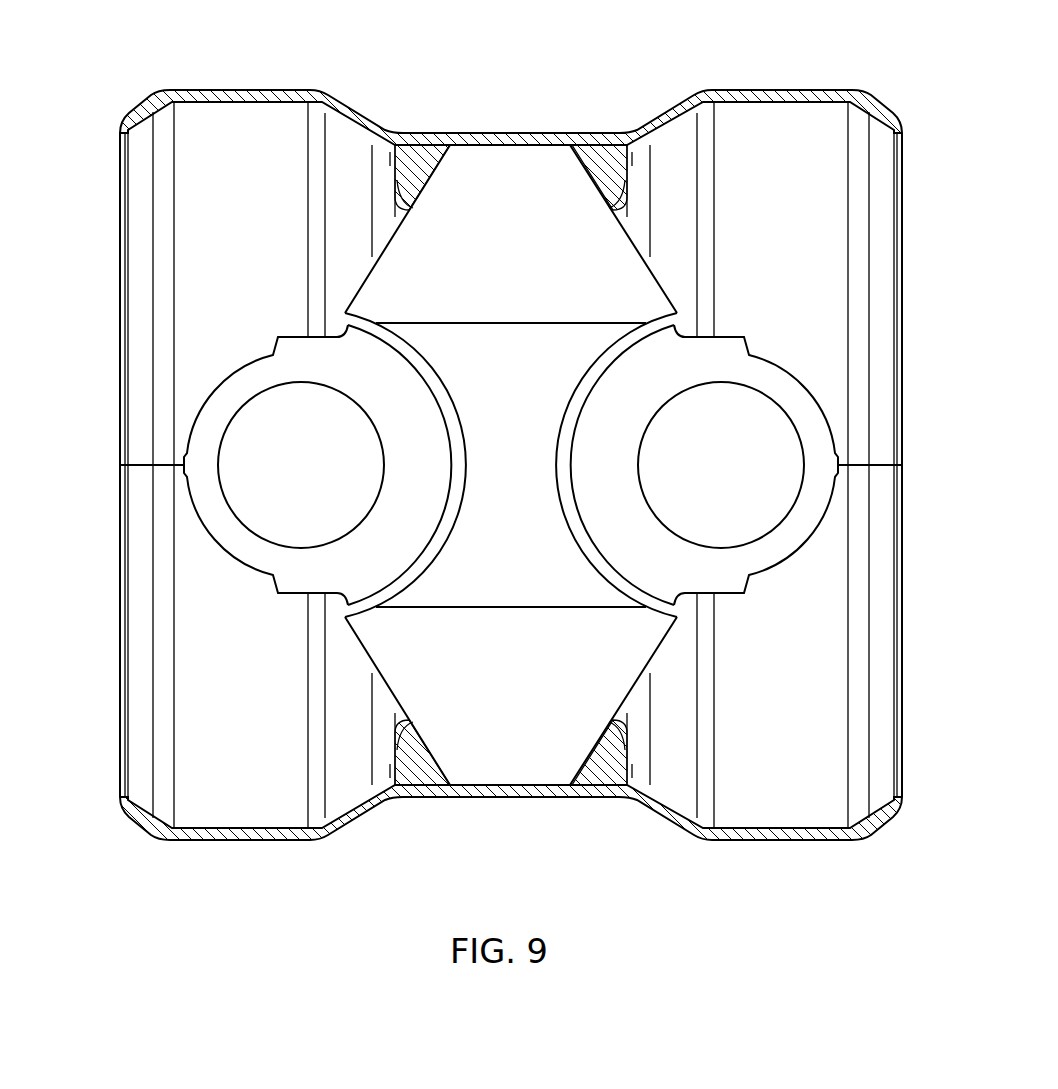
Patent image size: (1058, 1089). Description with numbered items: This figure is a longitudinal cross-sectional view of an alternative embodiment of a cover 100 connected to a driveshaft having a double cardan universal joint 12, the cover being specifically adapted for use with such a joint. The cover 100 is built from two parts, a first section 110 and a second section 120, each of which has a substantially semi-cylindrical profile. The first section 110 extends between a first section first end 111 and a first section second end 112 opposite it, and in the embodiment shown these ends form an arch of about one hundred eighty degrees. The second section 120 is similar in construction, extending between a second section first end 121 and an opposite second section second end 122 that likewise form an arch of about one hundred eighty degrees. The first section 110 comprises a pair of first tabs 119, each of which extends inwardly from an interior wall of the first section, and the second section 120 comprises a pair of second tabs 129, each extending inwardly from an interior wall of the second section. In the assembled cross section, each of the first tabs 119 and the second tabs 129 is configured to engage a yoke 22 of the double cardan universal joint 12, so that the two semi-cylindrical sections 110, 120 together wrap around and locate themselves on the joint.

The cover 100 is at (104, 110).
The first section 110 is at (786, 122).
The first section first end 111 is at (120, 265).
The first section second end 112 is at (902, 315).
The first tabs 119 is at (410, 166).
The second section 120 is at (772, 810).
The second section first end 121 is at (120, 690).
The second section second end 122 is at (902, 655).
The second tabs 129 is at (402, 755).
The double cardan universal joint 12 is at (240, 468).
The yoke of a double cardan universal joint 22 is at (512, 783).